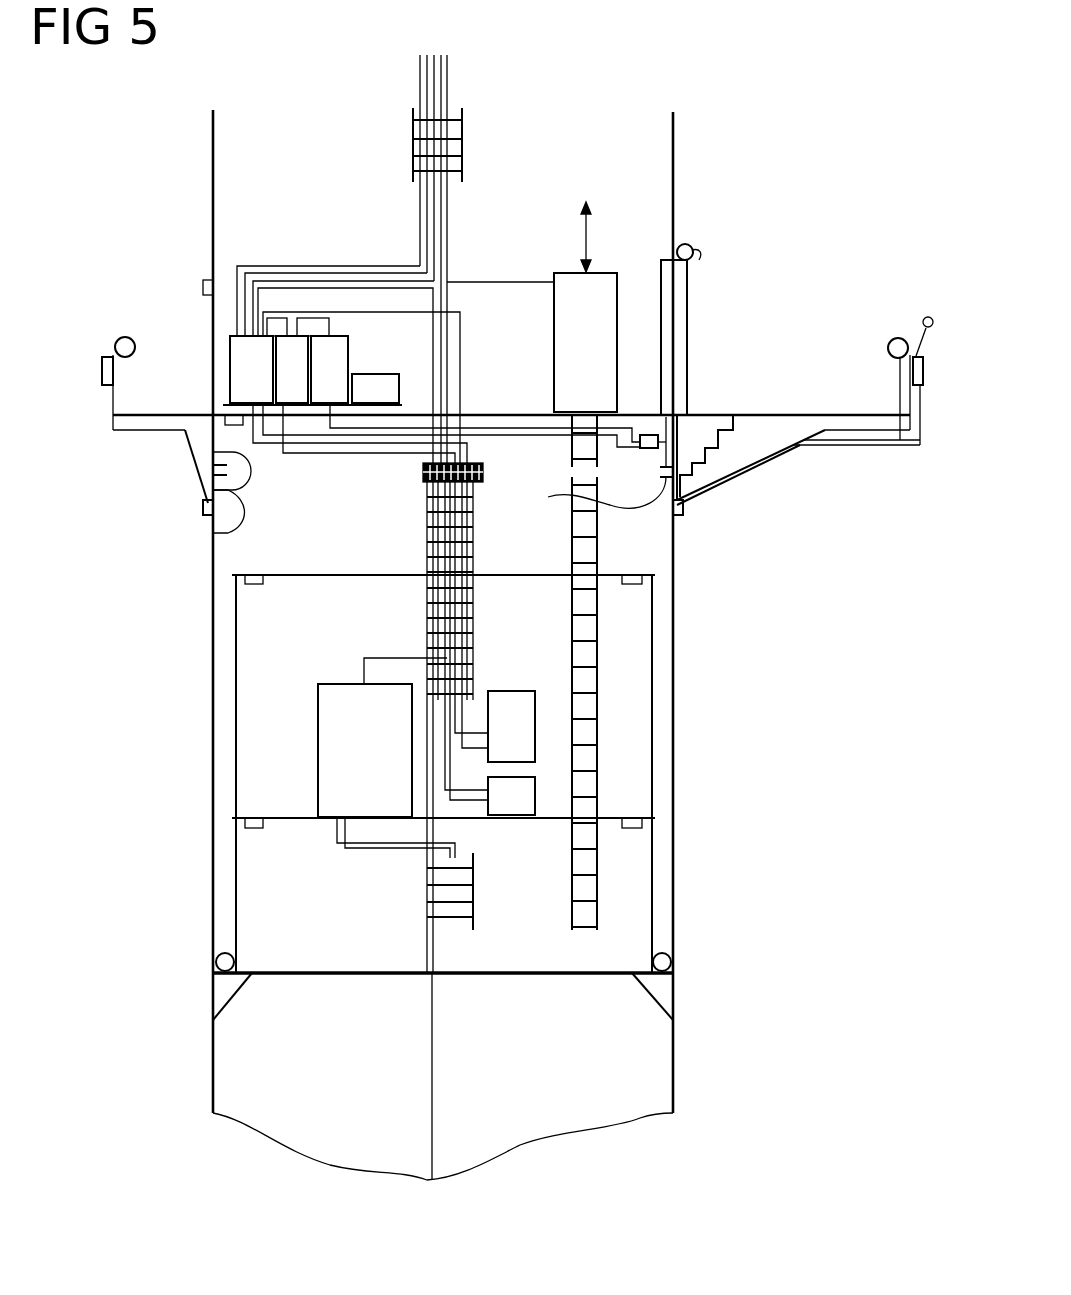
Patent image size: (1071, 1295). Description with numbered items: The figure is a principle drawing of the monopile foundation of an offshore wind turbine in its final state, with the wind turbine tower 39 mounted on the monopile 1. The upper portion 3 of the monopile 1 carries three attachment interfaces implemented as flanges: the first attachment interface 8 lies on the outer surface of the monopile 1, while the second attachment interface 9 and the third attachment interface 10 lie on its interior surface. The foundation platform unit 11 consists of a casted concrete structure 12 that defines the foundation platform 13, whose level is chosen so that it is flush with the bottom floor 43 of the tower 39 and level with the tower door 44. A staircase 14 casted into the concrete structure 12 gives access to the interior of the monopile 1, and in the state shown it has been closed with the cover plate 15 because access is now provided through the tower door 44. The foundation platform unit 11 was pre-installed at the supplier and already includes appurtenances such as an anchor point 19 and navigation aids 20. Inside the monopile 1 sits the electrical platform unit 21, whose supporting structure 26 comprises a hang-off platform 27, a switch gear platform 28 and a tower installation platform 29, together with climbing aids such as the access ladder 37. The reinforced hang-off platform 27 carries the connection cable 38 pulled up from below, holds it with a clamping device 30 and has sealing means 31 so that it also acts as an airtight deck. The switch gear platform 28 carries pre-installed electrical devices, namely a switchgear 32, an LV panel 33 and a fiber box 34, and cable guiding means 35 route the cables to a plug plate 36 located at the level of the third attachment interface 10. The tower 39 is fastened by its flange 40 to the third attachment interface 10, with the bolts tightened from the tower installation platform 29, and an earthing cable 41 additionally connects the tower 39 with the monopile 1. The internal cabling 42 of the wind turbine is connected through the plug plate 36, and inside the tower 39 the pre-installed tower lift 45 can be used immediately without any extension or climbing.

The monopile 1 is at (675, 855).
The upper portion 3 is at (118, 297).
The first attachment interface 8 is at (203, 506).
The second attachment interface 9 is at (228, 997).
The third attachment interface 10 is at (592, 465).
The foundation platform unit 11 is at (197, 452).
The concrete structure 12 is at (758, 448).
The foundation platform 13 is at (785, 413).
The staircase 14 is at (712, 447).
The cover plate 15 is at (712, 413).
The anchor point 19 is at (930, 316).
The navigation aids 20 is at (102, 372).
The electrical platform unit 21 is at (652, 757).
The supporting structure 26 is at (236, 672).
The hang-off platform 27 is at (280, 973).
The switch gear platform 28 is at (282, 818).
The tower installation platform 29 is at (282, 575).
The clamping device 30 is at (427, 893).
The sealing means 31 is at (668, 962).
The switchgear 32 is at (318, 745).
The LV panel 33 is at (536, 720).
The fiber box 34 is at (536, 800).
The cable guiding means 35 is at (475, 540).
The plug plate 36 is at (496, 460).
The access ladder 37 is at (598, 653).
The connection cable 38 is at (433, 1093).
The tower 39 is at (211, 164).
The flange 40 is at (668, 460).
The earthing cable 41 is at (213, 523).
The internal cabling 42 is at (318, 234).
The bottom floor 43 is at (528, 413).
The tower door 44 is at (658, 283).
The tower lift 45 is at (553, 272).